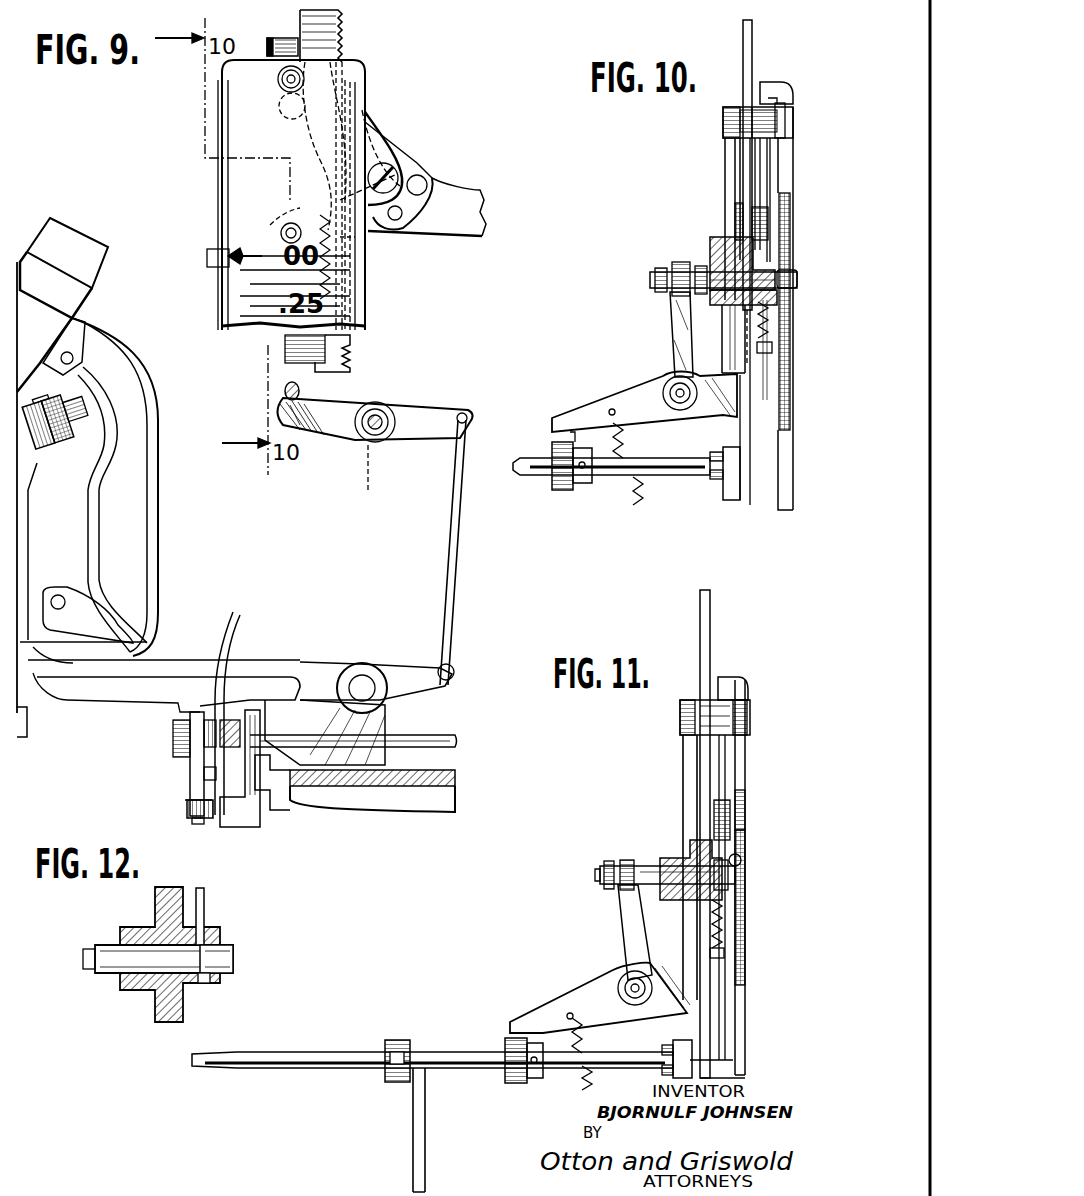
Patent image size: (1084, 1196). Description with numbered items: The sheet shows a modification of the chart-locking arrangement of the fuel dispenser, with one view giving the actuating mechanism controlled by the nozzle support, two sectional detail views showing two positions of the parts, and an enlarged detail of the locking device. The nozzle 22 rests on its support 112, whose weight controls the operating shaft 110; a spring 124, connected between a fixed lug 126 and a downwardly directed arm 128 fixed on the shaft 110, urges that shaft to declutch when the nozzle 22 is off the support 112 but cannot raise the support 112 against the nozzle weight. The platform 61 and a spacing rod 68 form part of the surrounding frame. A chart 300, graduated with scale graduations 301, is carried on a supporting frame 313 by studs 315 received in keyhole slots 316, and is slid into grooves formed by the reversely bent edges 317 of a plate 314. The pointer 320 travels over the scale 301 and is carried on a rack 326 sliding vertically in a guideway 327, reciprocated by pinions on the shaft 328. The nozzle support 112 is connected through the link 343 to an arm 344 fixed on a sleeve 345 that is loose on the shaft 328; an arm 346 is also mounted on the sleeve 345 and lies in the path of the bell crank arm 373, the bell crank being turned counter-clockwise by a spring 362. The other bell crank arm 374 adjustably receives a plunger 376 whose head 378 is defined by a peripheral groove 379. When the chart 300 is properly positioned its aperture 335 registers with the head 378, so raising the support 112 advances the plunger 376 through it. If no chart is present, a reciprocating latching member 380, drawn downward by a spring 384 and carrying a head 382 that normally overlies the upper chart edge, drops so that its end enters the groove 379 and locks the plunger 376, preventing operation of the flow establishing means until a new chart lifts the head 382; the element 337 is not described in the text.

In FIG. 9, the nozzle 22 is at (85, 240).
In FIG. 9, the platform 61 is at (430, 775).
In FIG. 9, the spacing rod 68 is at (403, 215).
In FIG. 9, the operating shaft 110 is at (425, 736).
In FIG. 9, the nozzle support 112 is at (290, 668).
In FIG. 9, the spring 124 is at (192, 800).
In FIG. 9, the fixed lug 126 is at (190, 809).
In FIG. 9, the downwardly directed arm 128 is at (200, 760).
In FIG. 9, the chart 300 is at (352, 74).
In FIG. 10, the chart 300 is at (775, 97).
In FIG. 11, the chart 300 is at (740, 698).
In FIG. 9, the scale graduation 301 is at (258, 288).
In FIG. 9, the supporting frame 313 is at (400, 158).
In FIG. 10, the supporting frame 313 is at (727, 152).
In FIG. 11, the supporting frame 313 is at (687, 748).
In FIG. 9, the plate 314 is at (248, 332).
In FIG. 10, the plate 314 is at (786, 492).
In FIG. 11, the plate 314 is at (742, 1008).
In FIG. 9, the stud 315 is at (278, 78).
In FIG. 10, the stud 315 is at (753, 110).
In FIG. 9, the keyhole slot 316 is at (285, 116).
In FIG. 9, the reversely bent edge 317 is at (235, 325).
In FIG. 9, the pointer 320 is at (205, 258).
In FIG. 9, the rack 326 is at (342, 30).
In FIG. 10, the rack 326 is at (742, 38).
In FIG. 11, the rack 326 is at (708, 640).
In FIG. 10, the guideway 327 is at (740, 500).
In FIG. 11, the guideway 327 is at (700, 1040).
In FIG. 12, the guideway 327 is at (160, 903).
In FIG. 9, the shaft 328 is at (378, 414).
In FIG. 10, the shaft 328 is at (773, 70).
In FIG. 11, the shaft 328 is at (640, 1032).
In FIG. 11, the aperture 335 is at (743, 866).
In FIG. 11, the spring retainer 337 is at (743, 826).
In FIG. 9, the link 343 is at (452, 578).
In FIG. 11, the link 343 is at (414, 1115).
In FIG. 9, the arm 344 is at (427, 400).
In FIG. 11, the arm 344 is at (412, 1044).
In FIG. 9, the sleeve 345 is at (386, 478).
In FIG. 10, the sleeve 345 is at (543, 456).
In FIG. 11, the sleeve 345 is at (455, 1052).
In FIG. 9, the arm 346 is at (318, 422).
In FIG. 10, the arm 346 is at (573, 490).
In FIG. 11, the arm 346 is at (534, 1084).
In FIG. 10, the spring 362 is at (633, 447).
In FIG. 11, the spring 362 is at (597, 1072).
In FIG. 9, the bell crank arm 373 is at (282, 395).
In FIG. 10, the bell crank arm 373 is at (635, 400).
In FIG. 11, the bell crank arm 373 is at (600, 1003).
In FIG. 10, the bell crank arm 374 is at (674, 330).
In FIG. 11, the bell crank arm 374 is at (625, 918).
In FIG. 10, the plunger 376 is at (722, 262).
In FIG. 11, the plunger 376 is at (660, 852).
In FIG. 12, the plunger 376 is at (140, 960).
In FIG. 9, the head 378 is at (280, 232).
In FIG. 10, the head 378 is at (712, 300).
In FIG. 11, the head 378 is at (740, 870).
In FIG. 12, the head 378 is at (236, 946).
In FIG. 12, the peripheral groove 379 is at (204, 985).
In FIG. 9, the latching member 380 is at (375, 153).
In FIG. 10, the latching member 380 is at (757, 170).
In FIG. 11, the latching member 380 is at (722, 768).
In FIG. 12, the latching member 380 is at (200, 908).
In FIG. 9, the head 382 is at (268, 45).
In FIG. 9, the spring 384 is at (367, 245).
In FIG. 10, the spring 384 is at (758, 335).
In FIG. 11, the spring 384 is at (724, 915).